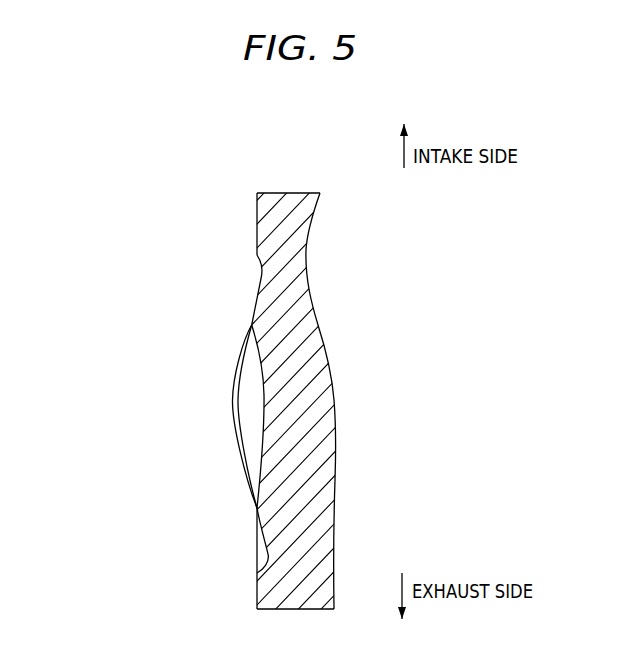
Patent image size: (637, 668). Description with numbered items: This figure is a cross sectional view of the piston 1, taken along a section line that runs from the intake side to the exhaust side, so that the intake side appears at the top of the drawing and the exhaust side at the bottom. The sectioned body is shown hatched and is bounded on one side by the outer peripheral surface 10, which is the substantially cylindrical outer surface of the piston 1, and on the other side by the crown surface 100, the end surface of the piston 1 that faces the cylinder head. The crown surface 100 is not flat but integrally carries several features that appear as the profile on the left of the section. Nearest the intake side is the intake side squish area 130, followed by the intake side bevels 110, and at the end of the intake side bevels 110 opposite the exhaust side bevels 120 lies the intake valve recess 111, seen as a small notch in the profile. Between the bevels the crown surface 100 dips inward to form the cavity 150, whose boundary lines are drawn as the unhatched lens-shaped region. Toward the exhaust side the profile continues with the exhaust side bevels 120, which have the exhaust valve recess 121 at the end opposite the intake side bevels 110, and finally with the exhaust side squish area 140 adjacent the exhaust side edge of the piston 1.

The piston 1 is at (217, 175).
The outer peripheral surface 10 is at (293, 193).
The crown surface 100 is at (173, 232).
The intake side bevels 110 is at (247, 343).
The intake valve recess 111 is at (262, 273).
The exhaust side bevels 120 is at (240, 447).
The exhaust valve recess 121 is at (268, 556).
The intake side squish area 130 is at (257, 210).
The exhaust side squish area 140 is at (257, 597).
The cavity 150 is at (262, 397).